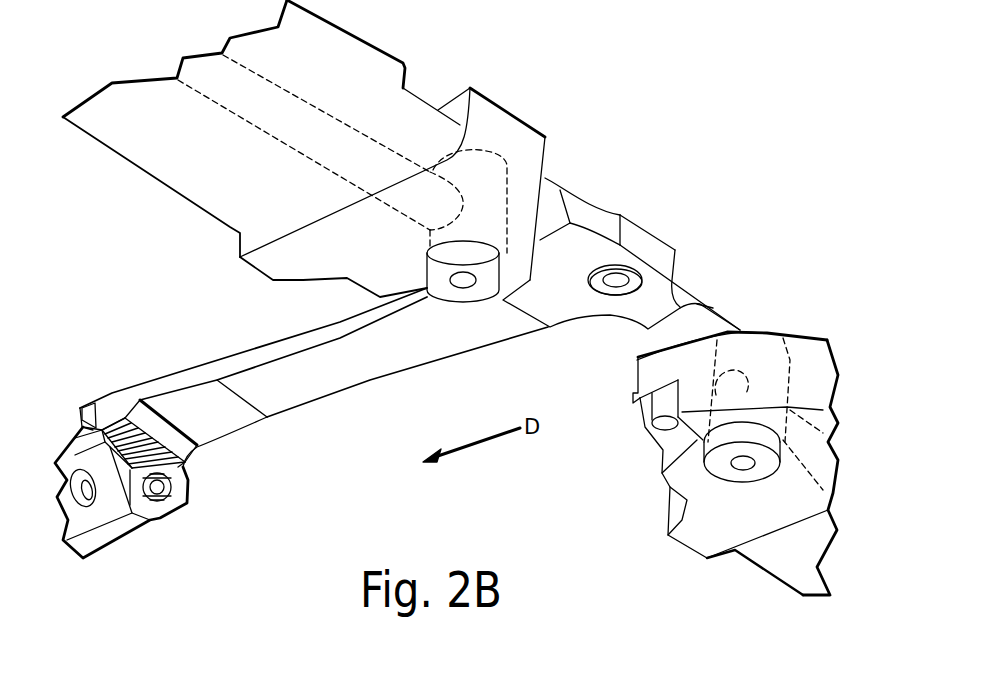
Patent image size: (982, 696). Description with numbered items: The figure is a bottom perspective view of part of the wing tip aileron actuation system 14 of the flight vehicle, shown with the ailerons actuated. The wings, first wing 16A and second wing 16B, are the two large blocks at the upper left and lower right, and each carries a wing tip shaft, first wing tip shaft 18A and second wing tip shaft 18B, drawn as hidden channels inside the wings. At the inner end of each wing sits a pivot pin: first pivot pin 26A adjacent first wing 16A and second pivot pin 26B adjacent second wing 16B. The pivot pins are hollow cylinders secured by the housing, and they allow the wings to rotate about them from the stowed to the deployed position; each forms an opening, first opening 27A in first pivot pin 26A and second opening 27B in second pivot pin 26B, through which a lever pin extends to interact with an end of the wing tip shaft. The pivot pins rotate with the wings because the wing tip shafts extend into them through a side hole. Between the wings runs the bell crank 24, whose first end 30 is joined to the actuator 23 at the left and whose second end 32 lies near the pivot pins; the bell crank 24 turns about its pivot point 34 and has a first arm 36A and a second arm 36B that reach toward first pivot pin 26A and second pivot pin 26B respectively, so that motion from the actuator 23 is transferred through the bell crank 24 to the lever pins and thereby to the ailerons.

The wing tip aileron actuation system 14 is at (678, 167).
The first wing 16A is at (218, 173).
The second wing 16B is at (785, 558).
The first wing tip shaft 18A is at (280, 123).
The second wing tip shaft 18B is at (817, 453).
The actuator 23 is at (120, 527).
The bell crank 24 is at (353, 360).
The first pivot pin 26A is at (476, 295).
The second pivot pin 26B is at (682, 442).
The first opening 27A is at (458, 284).
The second opening 27B is at (742, 470).
The first end 30 is at (110, 413).
The second end 32 is at (635, 237).
The pivot point 34 is at (630, 273).
The first arm 36A is at (545, 180).
The second arm 36B is at (740, 313).